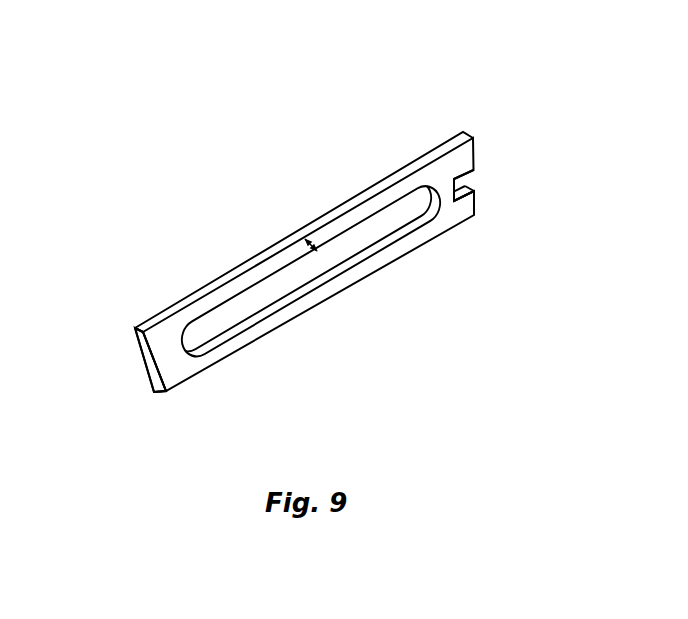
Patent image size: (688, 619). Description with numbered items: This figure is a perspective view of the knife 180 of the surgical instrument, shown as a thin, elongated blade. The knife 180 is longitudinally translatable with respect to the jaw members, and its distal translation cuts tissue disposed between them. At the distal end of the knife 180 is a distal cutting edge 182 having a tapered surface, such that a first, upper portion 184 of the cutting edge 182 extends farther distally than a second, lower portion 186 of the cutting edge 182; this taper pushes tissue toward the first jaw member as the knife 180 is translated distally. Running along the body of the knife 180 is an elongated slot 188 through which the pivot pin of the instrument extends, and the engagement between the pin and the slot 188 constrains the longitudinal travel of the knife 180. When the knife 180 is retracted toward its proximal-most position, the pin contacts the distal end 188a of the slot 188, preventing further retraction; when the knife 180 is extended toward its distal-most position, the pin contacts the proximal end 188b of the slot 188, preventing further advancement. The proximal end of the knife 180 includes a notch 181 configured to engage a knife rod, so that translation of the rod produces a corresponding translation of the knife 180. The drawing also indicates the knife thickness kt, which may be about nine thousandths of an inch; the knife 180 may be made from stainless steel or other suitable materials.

The knife 180 is at (310, 92).
The slot 188 is at (390, 215).
The proximal end of slot 188b is at (183, 340).
The distal end of slot 188a is at (455, 178).
The notch 181 is at (475, 190).
The first, upper portion of cutting edge 184 is at (138, 358).
The distal cutting edge 182 is at (140, 368).
The second, lower portion of cutting edge 186 is at (152, 383).
The knife thickness kt is at (290, 234).